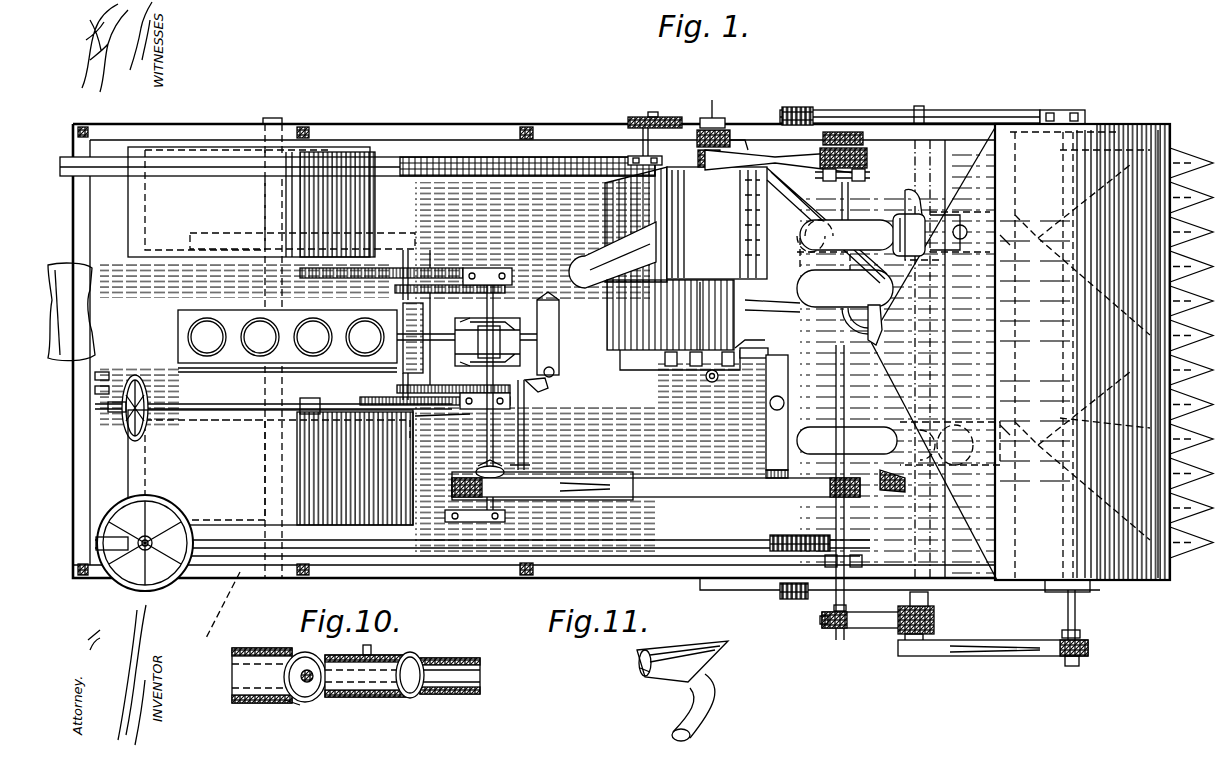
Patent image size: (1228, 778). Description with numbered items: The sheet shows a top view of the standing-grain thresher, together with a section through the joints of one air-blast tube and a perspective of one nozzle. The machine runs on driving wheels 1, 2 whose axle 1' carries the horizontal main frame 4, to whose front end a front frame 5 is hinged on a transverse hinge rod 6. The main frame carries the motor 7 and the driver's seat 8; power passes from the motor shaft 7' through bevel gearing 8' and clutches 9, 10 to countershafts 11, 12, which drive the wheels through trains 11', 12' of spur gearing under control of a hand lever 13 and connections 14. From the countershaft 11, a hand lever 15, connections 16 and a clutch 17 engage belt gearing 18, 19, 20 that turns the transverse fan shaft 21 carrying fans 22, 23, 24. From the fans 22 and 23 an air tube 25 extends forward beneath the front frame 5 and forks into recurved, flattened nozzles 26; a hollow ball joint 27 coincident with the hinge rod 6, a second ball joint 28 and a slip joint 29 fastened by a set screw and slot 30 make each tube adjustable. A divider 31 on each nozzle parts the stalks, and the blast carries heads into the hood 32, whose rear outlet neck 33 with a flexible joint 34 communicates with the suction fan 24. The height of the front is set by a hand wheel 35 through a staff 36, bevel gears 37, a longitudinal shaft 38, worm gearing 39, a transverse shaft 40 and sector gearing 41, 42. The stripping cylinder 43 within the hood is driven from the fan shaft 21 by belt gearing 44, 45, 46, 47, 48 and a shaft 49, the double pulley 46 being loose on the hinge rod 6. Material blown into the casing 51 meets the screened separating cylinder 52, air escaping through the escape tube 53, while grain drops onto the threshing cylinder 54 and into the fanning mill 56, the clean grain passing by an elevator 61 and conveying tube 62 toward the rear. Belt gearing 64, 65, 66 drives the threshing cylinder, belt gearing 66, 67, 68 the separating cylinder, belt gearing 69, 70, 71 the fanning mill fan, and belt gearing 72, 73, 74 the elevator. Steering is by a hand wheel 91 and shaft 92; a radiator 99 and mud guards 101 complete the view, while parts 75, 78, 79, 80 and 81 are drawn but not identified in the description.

In FIG. 1, the driving wheel 1 is at (586, 362).
In FIG. 1, the axle 1' is at (222, 606).
In FIG. 1, the driving wheel 2 is at (192, 157).
In FIG. 1, the main frame 4 is at (360, 147).
In FIG. 1, the front frame 5 is at (950, 162).
In FIG. 1, the hinge rod 6 is at (919, 106).
In FIG. 10, the hinge rod 6 is at (280, 700).
In FIG. 1, the motor 7 is at (287, 328).
In FIG. 1, the motor shaft 7' is at (488, 331).
In FIG. 1, the driver's seat 8 is at (71, 312).
In FIG. 1, the bevel gearing 8' is at (519, 342).
In FIG. 1, the clutch 9 is at (555, 370).
In FIG. 1, the clutch 10 is at (558, 303).
In FIG. 1, the countershaft 11 is at (448, 385).
In FIG. 1, the spur gearing train 11' is at (442, 421).
In FIG. 1, the countershaft 12 is at (486, 327).
In FIG. 1, the spur gearing train 12' is at (405, 322).
In FIG. 1, the hand lever 13 is at (95, 378).
In FIG. 1, the connections 14 is at (548, 385).
In FIG. 1, the hand lever 15 is at (95, 392).
In FIG. 1, the connections 16 is at (524, 430).
In FIG. 1, the clutch 17 is at (478, 468).
In FIG. 1, the belt gearing 18 is at (460, 510).
In FIG. 1, the belt gearing 19 is at (656, 486).
In FIG. 1, the belt gearing 20 is at (820, 408).
In FIG. 1, the fan shaft 21 is at (840, 633).
In FIG. 1, the fan 22 is at (766, 440).
In FIG. 1, the fan 23 is at (861, 235).
In FIG. 1, the suction fan 24 is at (816, 278).
In FIG. 1, the air tube 25 is at (993, 359).
In FIG. 10, the air tube 25 is at (245, 648).
In FIG. 11, the air tube 25 is at (705, 708).
In FIG. 1, the nozzle 26 is at (1082, 341).
In FIG. 11, the nozzle 26 is at (645, 677).
In FIG. 1, the hollow ball joint 27 is at (903, 339).
In FIG. 10, the hollow ball joint 27 is at (306, 698).
In FIG. 1, the ball joint 28 is at (965, 425).
In FIG. 10, the ball joint 28 is at (410, 698).
In FIG. 1, the slip joint 29 is at (958, 226).
In FIG. 10, the slip joint 29 is at (362, 698).
In FIG. 1, the set screw and slot 30 is at (887, 354).
In FIG. 10, the set screw and slot 30 is at (372, 650).
In FIG. 1, the divider 31 is at (1195, 160).
In FIG. 11, the divider 31 is at (718, 642).
In FIG. 1, the hood 32 is at (1163, 124).
In FIG. 1, the outlet neck 33 is at (919, 444).
In FIG. 1, the joint 34 is at (882, 335).
In FIG. 1, the hand wheel 35 is at (112, 515).
In FIG. 1, the vertical shaft 36 is at (120, 582).
In FIG. 1, the bevel gears 37 is at (185, 535).
In FIG. 1, the longitudinal shaft 38 is at (560, 533).
In FIG. 1, the worm gearing 39 is at (798, 535).
In FIG. 1, the transverse shaft 40 is at (796, 107).
In FIG. 1, the sector gearing 41 is at (805, 599).
In FIG. 1, the sector gearing 42 is at (780, 112).
In FIG. 1, the stripping cylinder 43 is at (1125, 582).
In FIG. 1, the belt gearing 44 is at (822, 630).
In FIG. 1, the belt gearing 45 is at (882, 628).
In FIG. 1, the double pulley 46 is at (932, 608).
In FIG. 1, the belt gearing 47 is at (990, 656).
In FIG. 1, the pulley 48 is at (1062, 632).
In FIG. 1, the shaft 49 is at (1072, 666).
In FIG. 1, the casing 51 is at (735, 210).
In FIG. 1, the separating cylinder 52 is at (700, 285).
In FIG. 1, the escape tube 53 is at (618, 227).
In FIG. 1, the threshing cylinder 54 is at (670, 315).
In FIG. 1, the fanning mill 56 is at (680, 342).
In FIG. 1, the elevator 61 is at (470, 157).
In FIG. 1, the conveying tube 62 is at (148, 170).
In FIG. 1, the belt gearing 64 is at (867, 158).
In FIG. 1, the belt gearing 65 is at (815, 176).
In FIG. 1, the belt gearing 66 is at (707, 167).
In FIG. 1, the belt gearing 67 is at (697, 136).
In FIG. 1, the belt gearing 68 is at (654, 152).
In FIG. 1, the belt gearing 69 is at (863, 138).
In FIG. 1, the belt gearing 70 is at (783, 151).
In FIG. 1, the belt gearing 71 is at (740, 140).
In FIG. 1, the belt gearing 72 is at (714, 100).
In FIG. 1, the belt gearing 73 is at (705, 118).
In FIG. 1, the belt gearing 74 is at (653, 112).
In FIG. 1, the roller 75 is at (712, 386).
In FIG. 1, the hanger 78 is at (695, 366).
In FIG. 1, the hanger 79 is at (733, 366).
In FIG. 1, the hanger 80 is at (668, 365).
In FIG. 1, the plate 81 is at (762, 353).
In FIG. 1, the hand wheel 91 is at (108, 407).
In FIG. 1, the shaft 92 is at (245, 404).
In FIG. 1, the radiator 99 is at (766, 458).
In FIG. 1, the mud guards 101 is at (277, 335).